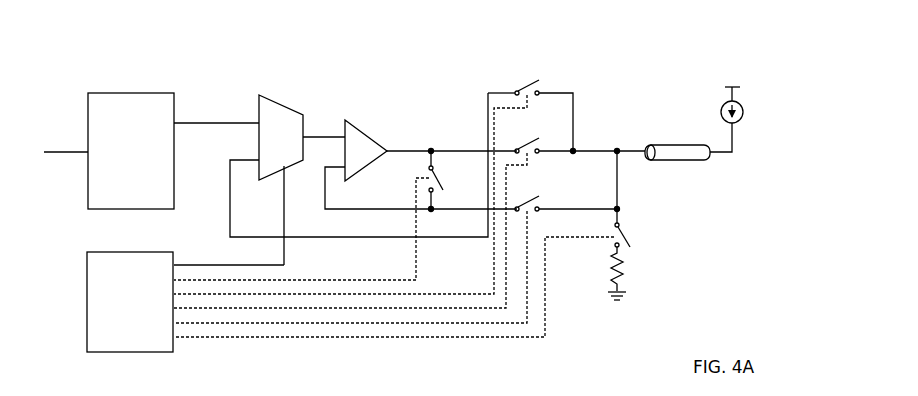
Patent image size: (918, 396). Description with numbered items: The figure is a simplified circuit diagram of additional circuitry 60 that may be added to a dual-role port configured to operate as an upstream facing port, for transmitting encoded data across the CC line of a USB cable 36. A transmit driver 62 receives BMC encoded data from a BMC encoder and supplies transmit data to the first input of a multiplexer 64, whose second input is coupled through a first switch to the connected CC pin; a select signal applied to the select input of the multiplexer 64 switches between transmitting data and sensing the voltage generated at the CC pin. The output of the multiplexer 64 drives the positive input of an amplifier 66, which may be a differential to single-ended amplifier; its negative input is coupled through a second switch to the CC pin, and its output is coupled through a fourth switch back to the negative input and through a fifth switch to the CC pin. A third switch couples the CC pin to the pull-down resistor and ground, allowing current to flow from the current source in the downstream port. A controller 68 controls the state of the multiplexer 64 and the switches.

The additional circuitry 60 is at (404, 31).
The transmit driver 62 is at (126, 91).
The multiplexer 64 is at (276, 95).
The amplifier 66 is at (352, 116).
The controller 68 is at (126, 250).
The cable 36 is at (678, 164).